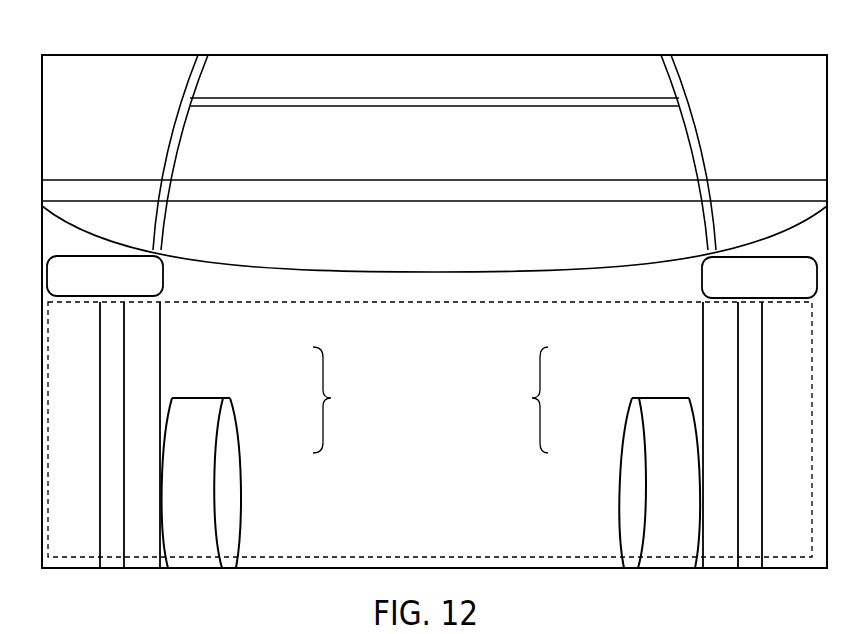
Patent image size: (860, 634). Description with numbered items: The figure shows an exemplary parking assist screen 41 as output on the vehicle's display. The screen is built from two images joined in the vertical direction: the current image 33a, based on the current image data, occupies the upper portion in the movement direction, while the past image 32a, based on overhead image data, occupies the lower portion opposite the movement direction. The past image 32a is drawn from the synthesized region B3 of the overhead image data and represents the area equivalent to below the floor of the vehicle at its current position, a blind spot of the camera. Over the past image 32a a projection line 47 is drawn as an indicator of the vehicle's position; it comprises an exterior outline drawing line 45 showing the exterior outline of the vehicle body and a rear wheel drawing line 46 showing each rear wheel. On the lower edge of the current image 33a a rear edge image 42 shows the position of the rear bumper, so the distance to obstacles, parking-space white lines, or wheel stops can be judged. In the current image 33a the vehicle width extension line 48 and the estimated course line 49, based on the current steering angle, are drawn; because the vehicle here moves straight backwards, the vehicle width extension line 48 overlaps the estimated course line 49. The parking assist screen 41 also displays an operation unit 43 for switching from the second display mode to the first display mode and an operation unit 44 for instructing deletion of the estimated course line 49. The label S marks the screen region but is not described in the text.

The parking assist screen 41 is at (89, 45).
The current image 33a is at (767, 68).
The estimated course line 49 is at (411, 139).
The vehicle width extension line 48 is at (190, 73).
The rear edge image 42 is at (603, 278).
The operation unit 43 is at (700, 273).
The operation unit 44 is at (163, 278).
The exterior outline drawing line 45 is at (160, 361).
The rear wheel drawing line 46 is at (243, 428).
The projection line 47 is at (431, 435).
The screen S is at (500, 570).
The synthesized region B3 is at (553, 557).
The past image 32a is at (787, 543).